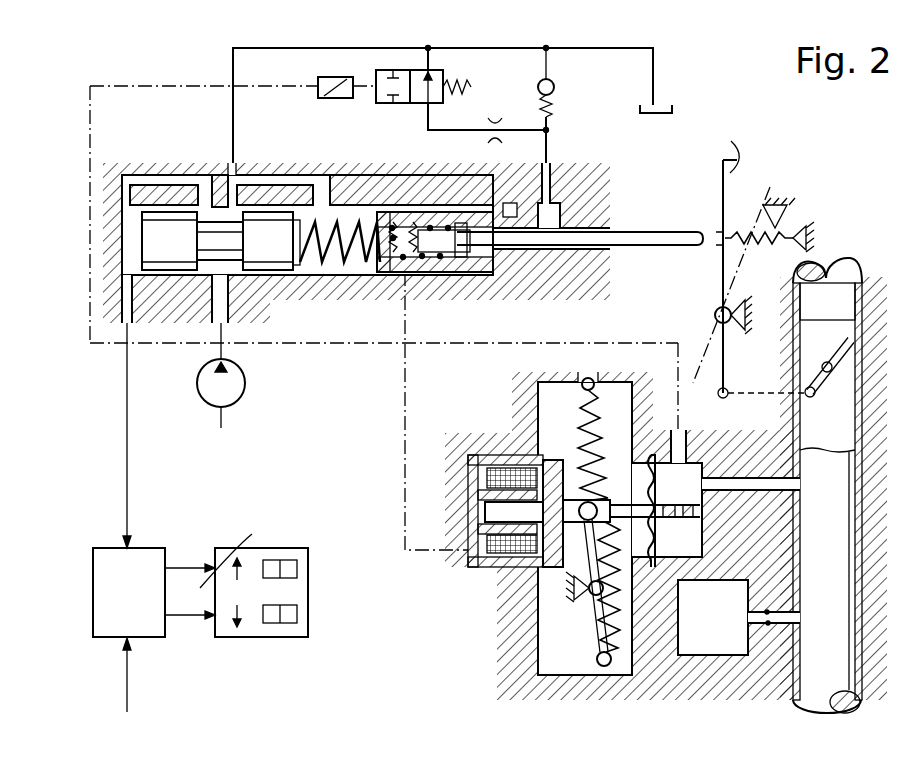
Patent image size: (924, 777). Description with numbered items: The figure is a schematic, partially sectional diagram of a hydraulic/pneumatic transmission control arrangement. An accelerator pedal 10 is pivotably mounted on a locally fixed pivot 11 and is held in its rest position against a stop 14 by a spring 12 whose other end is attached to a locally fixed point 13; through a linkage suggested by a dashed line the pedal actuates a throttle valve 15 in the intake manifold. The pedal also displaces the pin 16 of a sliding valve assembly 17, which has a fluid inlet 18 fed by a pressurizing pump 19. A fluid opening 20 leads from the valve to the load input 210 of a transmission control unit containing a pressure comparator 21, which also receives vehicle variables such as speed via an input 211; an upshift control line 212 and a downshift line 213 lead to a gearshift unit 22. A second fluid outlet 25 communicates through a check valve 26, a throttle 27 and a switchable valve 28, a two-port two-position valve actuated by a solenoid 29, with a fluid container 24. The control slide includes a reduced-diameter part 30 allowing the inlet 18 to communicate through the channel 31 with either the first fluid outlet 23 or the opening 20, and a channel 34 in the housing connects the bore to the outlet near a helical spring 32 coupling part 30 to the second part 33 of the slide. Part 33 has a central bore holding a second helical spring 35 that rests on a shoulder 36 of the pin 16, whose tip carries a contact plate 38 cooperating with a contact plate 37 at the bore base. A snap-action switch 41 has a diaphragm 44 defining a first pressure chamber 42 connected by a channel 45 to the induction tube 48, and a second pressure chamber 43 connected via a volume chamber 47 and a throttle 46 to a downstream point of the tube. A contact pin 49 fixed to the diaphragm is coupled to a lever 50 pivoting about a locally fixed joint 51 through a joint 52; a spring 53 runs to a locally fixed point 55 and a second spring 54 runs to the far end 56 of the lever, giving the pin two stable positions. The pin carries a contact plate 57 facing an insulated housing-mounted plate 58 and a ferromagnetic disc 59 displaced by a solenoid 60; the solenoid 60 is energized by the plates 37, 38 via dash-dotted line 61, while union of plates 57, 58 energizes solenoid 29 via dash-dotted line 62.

The accelerator pedal 10 is at (722, 186).
The pivot 11 is at (715, 314).
The spring 12 is at (752, 246).
The locally fixed point 13 is at (800, 230).
The stop 14 is at (772, 203).
The throttle valve 15 is at (818, 392).
The pin 16 is at (627, 233).
The sliding valve assembly 17 is at (613, 172).
The fluid inlet 18 is at (226, 322).
The pressurizing pump 19 is at (244, 385).
The fluid opening 20 is at (130, 322).
The pressure comparator 21 is at (138, 557).
The gearshift unit 22 is at (283, 632).
The first fluid outlet 23 is at (236, 166).
The fluid container 24 is at (672, 106).
The second fluid outlet 25 is at (550, 170).
The check valve 26 is at (554, 90).
The throttle 27 is at (490, 121).
The switchable valve 28 is at (405, 103).
The solenoid 29 is at (345, 98).
The part of the valve control slide 30 is at (195, 243).
The channel 31 is at (214, 172).
The helical spring 32 is at (337, 267).
The second part of the valve slide 33 is at (490, 270).
The channel 34 is at (322, 178).
The second helical spring 35 is at (432, 227).
The shoulder 36 is at (450, 258).
The contact plate 37 is at (395, 260).
The contact plate 38 is at (413, 262).
The snap-action switch 41 is at (495, 598).
The first pressure chamber 42 is at (695, 472).
The second pressure chamber 43 is at (568, 672).
The diaphragm 44 is at (678, 463).
The channel 45 is at (750, 482).
The throttle 46 is at (795, 615).
The volume chamber 47 is at (733, 655).
The induction tube 48 is at (800, 695).
The contact pin 49 is at (490, 513).
The lever 50 is at (600, 638).
The locally fixed joint 51 is at (590, 592).
The joint 52 is at (592, 500).
The spring 53 is at (582, 400).
The second spring 54 is at (617, 590).
The locally fixed point 55 is at (590, 378).
The far end of the lever 56 is at (604, 667).
The contact plate 57 is at (668, 518).
The opposite contact plate 58 is at (690, 517).
The ferromagnetic disc 59 is at (574, 445).
The solenoid 60 is at (470, 472).
The dash-dotted line 61 is at (404, 418).
The dash-dotted line 62 is at (134, 86).
The load input 210 is at (122, 545).
The input 211 is at (122, 640).
The upshift control line 212 is at (192, 564).
The downshift line 213 is at (180, 617).